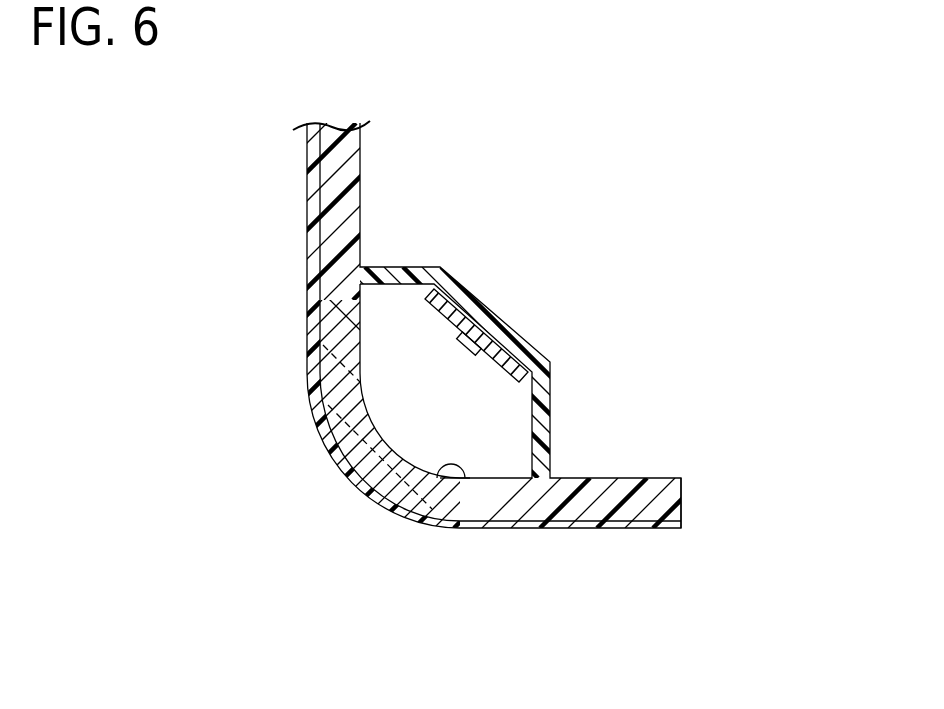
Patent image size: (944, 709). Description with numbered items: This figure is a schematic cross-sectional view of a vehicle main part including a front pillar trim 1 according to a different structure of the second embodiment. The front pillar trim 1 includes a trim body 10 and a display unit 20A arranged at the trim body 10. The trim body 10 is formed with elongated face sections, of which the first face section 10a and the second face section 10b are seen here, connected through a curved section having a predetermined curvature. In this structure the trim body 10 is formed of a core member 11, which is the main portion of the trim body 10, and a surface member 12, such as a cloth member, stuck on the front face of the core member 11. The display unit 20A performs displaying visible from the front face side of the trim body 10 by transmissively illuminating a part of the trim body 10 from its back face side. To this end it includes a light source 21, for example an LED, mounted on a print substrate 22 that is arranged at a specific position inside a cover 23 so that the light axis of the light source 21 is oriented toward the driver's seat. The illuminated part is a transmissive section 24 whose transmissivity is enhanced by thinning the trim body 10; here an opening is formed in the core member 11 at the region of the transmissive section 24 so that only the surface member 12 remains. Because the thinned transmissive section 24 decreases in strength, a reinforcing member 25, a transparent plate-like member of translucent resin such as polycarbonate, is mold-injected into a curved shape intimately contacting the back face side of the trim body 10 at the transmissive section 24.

The front pillar trim 1 is at (262, 166).
The trim body 10 is at (648, 465).
The first face section 10a is at (597, 477).
The second face section 10b is at (360, 188).
The core member 11 is at (662, 499).
The surface member 12 is at (312, 410).
The display unit 20A is at (586, 178).
The light source 21 is at (466, 345).
The print substrate 22 is at (461, 288).
The cover 23 is at (550, 361).
The transmissive section 24 is at (320, 388).
The reinforcing member 25 is at (462, 480).